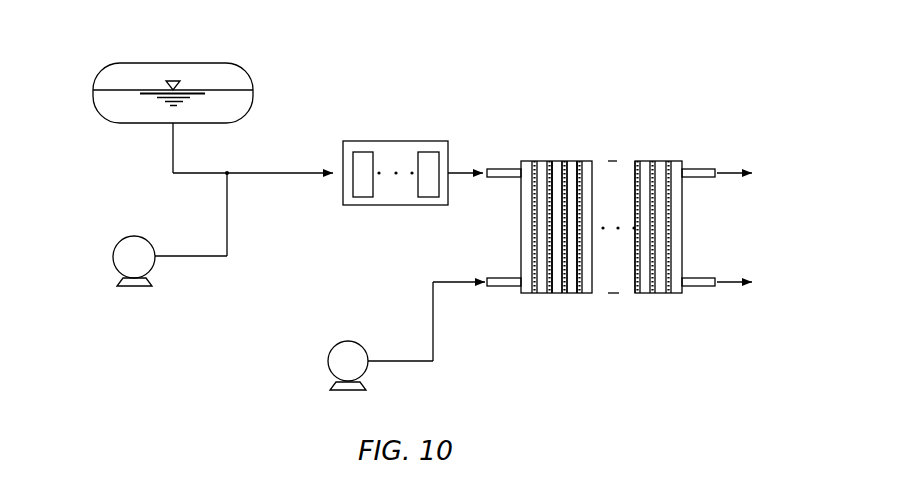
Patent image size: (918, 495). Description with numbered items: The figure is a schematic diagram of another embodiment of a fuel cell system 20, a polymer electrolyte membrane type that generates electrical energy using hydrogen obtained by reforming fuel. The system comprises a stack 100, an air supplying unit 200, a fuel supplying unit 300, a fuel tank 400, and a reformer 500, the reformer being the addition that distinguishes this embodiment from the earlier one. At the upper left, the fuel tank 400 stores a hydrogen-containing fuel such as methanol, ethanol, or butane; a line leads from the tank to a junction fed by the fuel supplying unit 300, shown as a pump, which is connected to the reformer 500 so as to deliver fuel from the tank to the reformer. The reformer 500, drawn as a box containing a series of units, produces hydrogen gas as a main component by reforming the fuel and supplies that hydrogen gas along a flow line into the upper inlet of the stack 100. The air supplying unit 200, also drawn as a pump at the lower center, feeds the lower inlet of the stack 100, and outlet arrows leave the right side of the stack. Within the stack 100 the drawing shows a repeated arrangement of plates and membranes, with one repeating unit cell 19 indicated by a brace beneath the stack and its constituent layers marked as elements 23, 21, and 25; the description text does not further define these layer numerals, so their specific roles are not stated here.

The fuel cell system 20 is at (680, 48).
The fuel tank 400 is at (90, 68).
The fuel supplying unit 300 is at (133, 236).
The reformer 500 is at (395, 141).
The stack 100 is at (606, 232).
The air supplying unit 200 is at (347, 341).
The first flow channel / electrode 23 is at (557, 293).
The ion exchange membrane 21 is at (563, 293).
The second flow channel / electrode 25 is at (575, 293).
The unit cell 19 is at (597, 332).